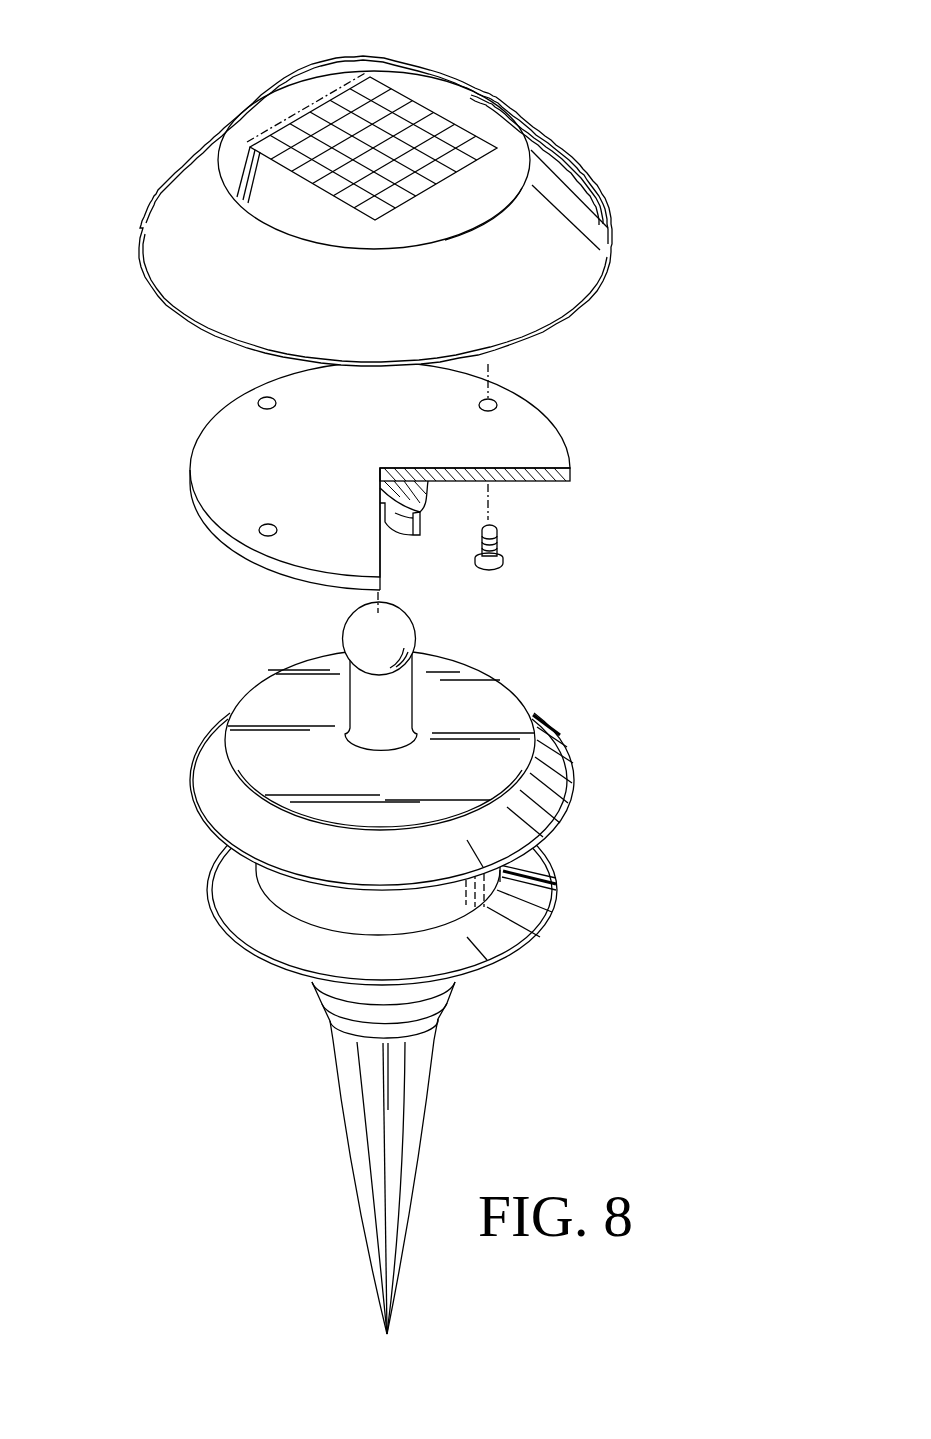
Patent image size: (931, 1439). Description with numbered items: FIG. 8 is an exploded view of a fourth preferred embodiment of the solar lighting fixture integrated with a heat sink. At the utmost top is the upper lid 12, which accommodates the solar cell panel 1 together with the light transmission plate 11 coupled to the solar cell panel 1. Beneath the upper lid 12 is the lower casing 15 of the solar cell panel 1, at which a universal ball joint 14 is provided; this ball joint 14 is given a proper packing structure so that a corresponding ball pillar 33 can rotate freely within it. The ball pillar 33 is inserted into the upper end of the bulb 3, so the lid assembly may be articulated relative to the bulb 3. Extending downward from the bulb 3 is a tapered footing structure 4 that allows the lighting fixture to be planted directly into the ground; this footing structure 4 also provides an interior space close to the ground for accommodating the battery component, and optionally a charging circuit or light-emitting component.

The solar cell panel 1 is at (412, 112).
The light transmission plate 11 is at (324, 59).
The upper lid 12 is at (166, 184).
The lower casing 15 is at (548, 442).
The universal ball joint 14 is at (400, 537).
The ball pillar 33 is at (365, 632).
The bulb 3 is at (242, 953).
The tapered footing structure 4 is at (352, 1093).